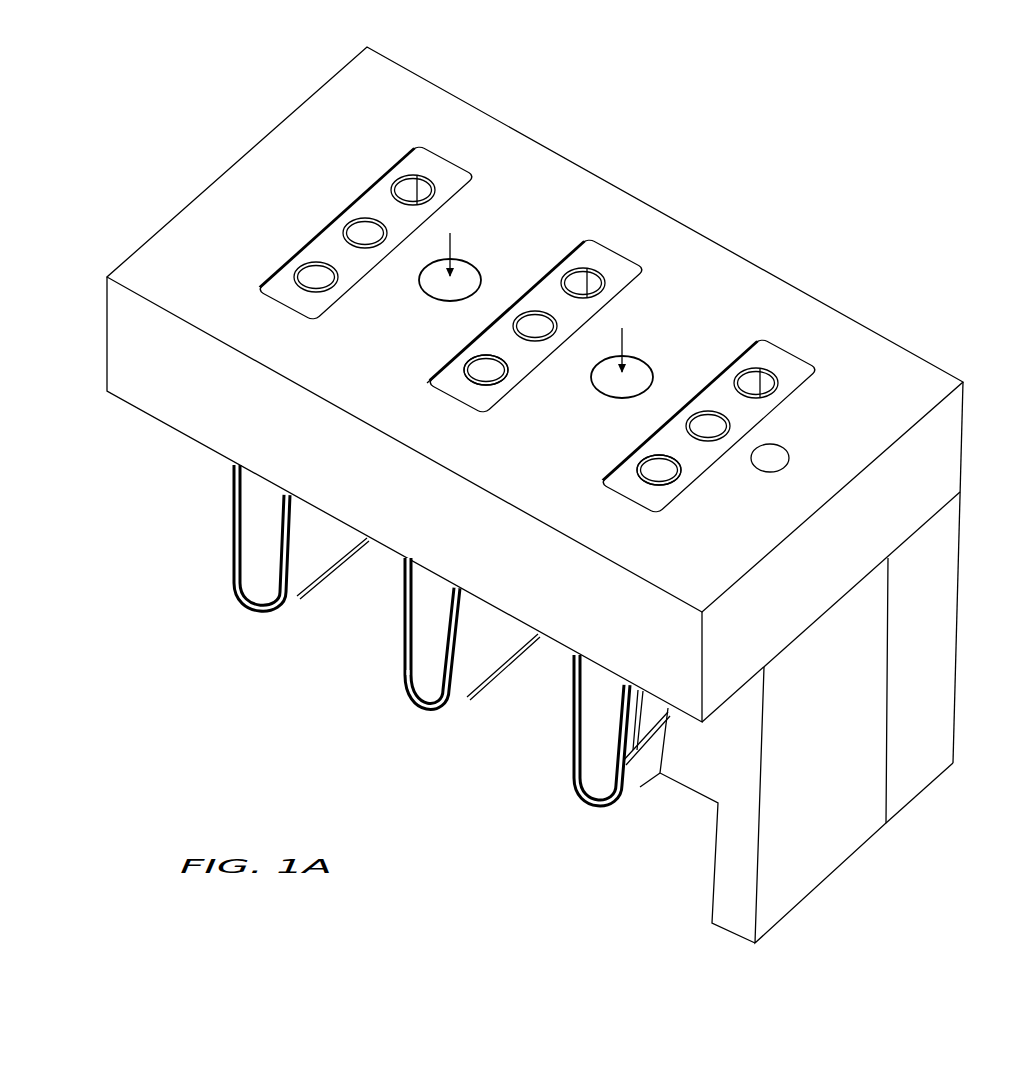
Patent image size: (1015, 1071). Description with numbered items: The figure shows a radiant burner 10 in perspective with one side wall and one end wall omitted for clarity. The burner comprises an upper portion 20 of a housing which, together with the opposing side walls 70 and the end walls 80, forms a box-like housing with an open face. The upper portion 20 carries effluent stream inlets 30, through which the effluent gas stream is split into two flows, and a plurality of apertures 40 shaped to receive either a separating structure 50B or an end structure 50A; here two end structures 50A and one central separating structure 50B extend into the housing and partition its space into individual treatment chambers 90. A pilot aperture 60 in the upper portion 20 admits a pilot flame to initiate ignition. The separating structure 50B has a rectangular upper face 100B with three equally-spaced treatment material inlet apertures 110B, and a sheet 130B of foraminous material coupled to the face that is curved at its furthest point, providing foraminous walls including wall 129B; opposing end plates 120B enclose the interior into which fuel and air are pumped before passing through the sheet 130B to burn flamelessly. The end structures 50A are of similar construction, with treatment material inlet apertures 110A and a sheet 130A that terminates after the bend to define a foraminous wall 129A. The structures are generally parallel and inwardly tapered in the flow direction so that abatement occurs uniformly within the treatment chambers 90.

The radiant burner 10 is at (183, 78).
The upper portion 20 is at (938, 368).
The effluent stream inlets 30 is at (470, 263).
The apertures 40 is at (416, 146).
The end structures 50A is at (323, 238).
The separating structure 50B is at (524, 374).
The pilot aperture 60 is at (789, 448).
The side walls 70 is at (940, 690).
The end walls 80 is at (835, 863).
The treatment chambers 90 is at (313, 688).
The upper face 100B is at (442, 378).
The treatment material inlet apertures 110A is at (678, 481).
The treatment material inlet apertures 110B is at (499, 396).
The end plates 120B is at (406, 696).
The foraminous wall 129A is at (332, 556).
The foraminous wall 129B is at (494, 650).
The sheet of foraminous material 130A is at (290, 604).
The sheet of foraminous material 130B is at (470, 701).